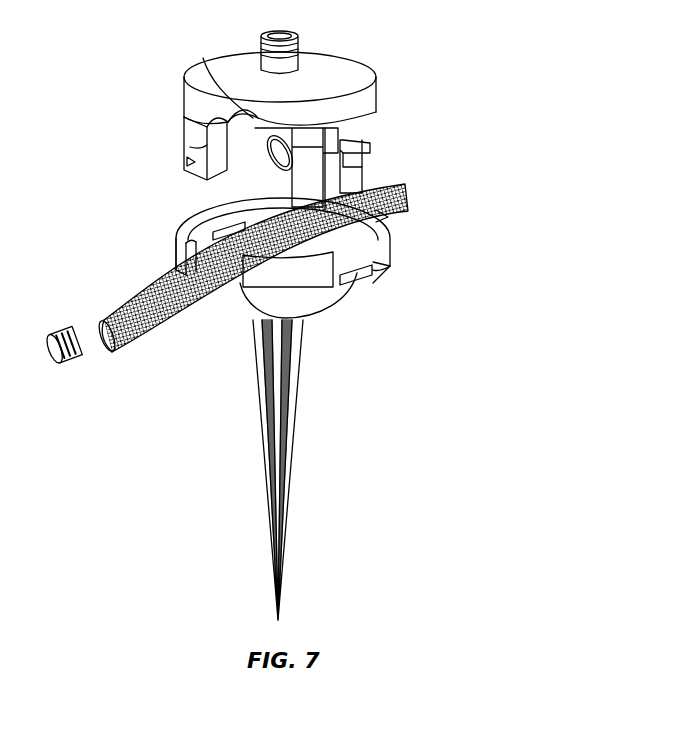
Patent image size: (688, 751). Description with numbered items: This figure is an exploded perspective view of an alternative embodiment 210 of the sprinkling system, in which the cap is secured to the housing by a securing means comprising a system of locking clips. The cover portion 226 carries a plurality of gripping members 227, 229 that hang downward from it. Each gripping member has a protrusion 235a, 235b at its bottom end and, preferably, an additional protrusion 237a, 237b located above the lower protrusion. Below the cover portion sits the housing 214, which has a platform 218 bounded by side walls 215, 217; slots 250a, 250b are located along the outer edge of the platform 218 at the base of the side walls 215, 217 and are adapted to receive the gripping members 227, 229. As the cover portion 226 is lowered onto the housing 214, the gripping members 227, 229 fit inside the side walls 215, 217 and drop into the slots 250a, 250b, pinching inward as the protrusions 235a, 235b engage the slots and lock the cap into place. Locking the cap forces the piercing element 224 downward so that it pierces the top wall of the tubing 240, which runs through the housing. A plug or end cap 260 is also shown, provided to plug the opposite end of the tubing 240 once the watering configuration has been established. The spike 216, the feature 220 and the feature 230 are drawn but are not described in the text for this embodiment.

The alternative embodiment 210 is at (413, 105).
The housing 214 is at (177, 262).
The side wall 215 is at (297, 287).
The stake spike 216 is at (297, 410).
The side wall 217 is at (177, 252).
The platform 218 is at (392, 243).
The bracket 220 is at (363, 280).
The piercing element 224 is at (392, 106).
The cover portion 226 is at (348, 63).
The gripping member 227 is at (195, 146).
The gripping member 229 is at (312, 198).
The slot 230 is at (206, 50).
The protrusion 235a is at (188, 160).
The protrusion 235b is at (388, 217).
The additional protrusion 237a is at (182, 112).
The additional protrusion 237b is at (367, 150).
The tubing 240 is at (150, 337).
The slot 250a is at (220, 227).
The slot 250b is at (362, 283).
The end cap 260 is at (70, 360).